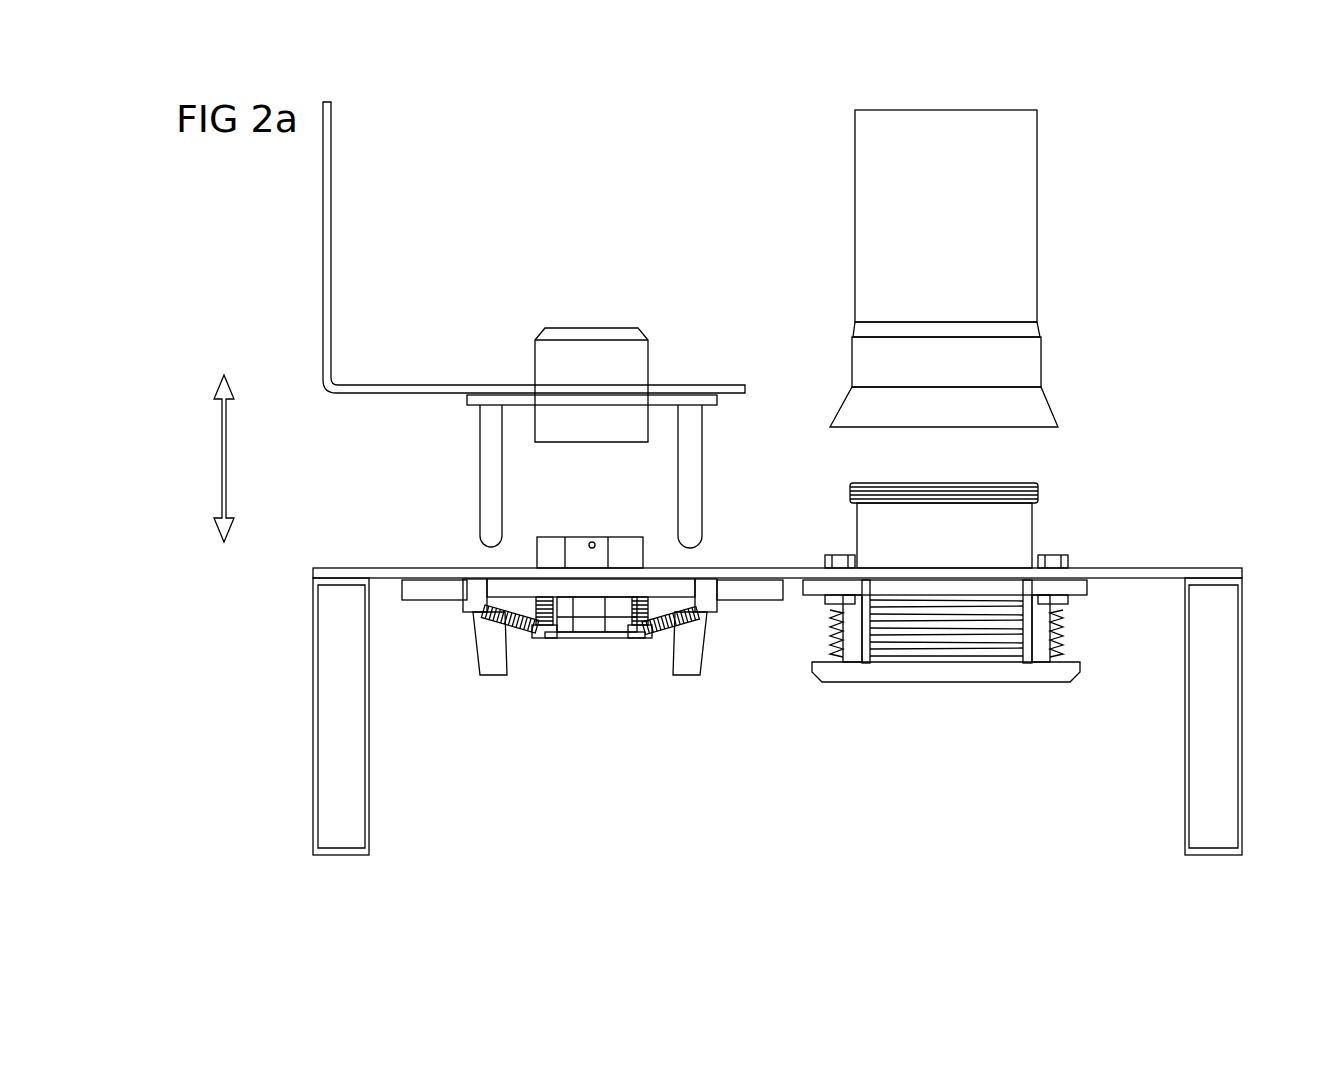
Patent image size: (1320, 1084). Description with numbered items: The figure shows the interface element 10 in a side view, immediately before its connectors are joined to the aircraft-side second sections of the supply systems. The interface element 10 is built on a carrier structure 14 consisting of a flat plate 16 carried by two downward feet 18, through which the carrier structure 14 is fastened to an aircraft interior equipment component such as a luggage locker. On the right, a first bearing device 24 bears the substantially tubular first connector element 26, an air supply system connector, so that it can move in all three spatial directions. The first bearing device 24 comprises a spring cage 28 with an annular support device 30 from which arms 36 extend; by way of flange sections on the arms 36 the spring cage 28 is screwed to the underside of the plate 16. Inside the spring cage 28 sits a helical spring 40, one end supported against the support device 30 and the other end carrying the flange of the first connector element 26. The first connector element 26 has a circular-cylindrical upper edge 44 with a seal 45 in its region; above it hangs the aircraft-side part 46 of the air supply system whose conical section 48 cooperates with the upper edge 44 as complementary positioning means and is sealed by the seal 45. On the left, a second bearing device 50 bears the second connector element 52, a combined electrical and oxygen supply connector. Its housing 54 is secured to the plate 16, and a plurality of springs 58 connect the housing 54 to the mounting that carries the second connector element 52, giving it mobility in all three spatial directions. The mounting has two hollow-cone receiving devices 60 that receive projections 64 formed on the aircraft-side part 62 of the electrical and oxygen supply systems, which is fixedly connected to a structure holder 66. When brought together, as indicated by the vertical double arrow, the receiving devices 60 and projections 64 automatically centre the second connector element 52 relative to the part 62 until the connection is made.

The interface element 10 is at (1142, 508).
The carrier structure 14 is at (1170, 570).
The plate 16 is at (388, 566).
The feet 18 is at (357, 760).
The first bearing device 24 is at (918, 705).
The first connector element 26 is at (1023, 530).
The spring cage 28 is at (1082, 648).
The support device 30 is at (1002, 665).
The arms 36 is at (838, 632).
The spring 40 is at (938, 635).
The upper edge 44 is at (1040, 485).
The seal 45 is at (942, 483).
The part of second section of air supply system 46 is at (1025, 215).
The conical section 48 is at (1055, 407).
The second bearing device 50 is at (566, 682).
The second connector element 52 is at (582, 547).
The housing 54 is at (433, 598).
The springs 58 is at (518, 630).
The receiving devices 60 is at (487, 660).
The part of second section of electrical and oxygen supply systems 62 is at (637, 365).
The projections 64 is at (490, 482).
The structure holder 66 is at (328, 227).